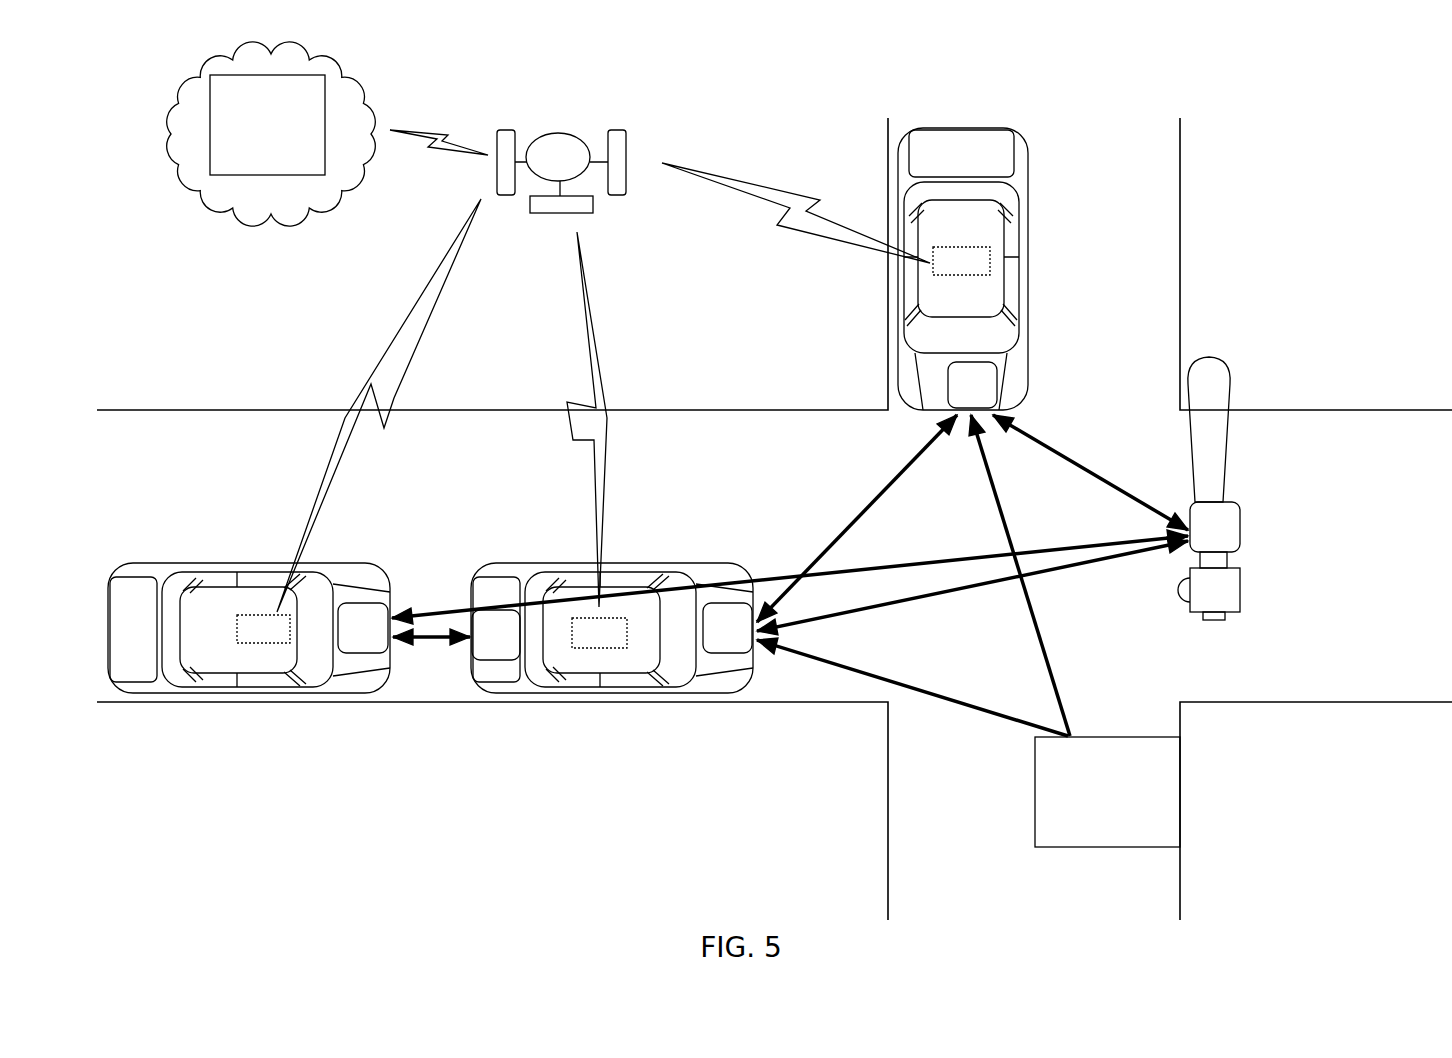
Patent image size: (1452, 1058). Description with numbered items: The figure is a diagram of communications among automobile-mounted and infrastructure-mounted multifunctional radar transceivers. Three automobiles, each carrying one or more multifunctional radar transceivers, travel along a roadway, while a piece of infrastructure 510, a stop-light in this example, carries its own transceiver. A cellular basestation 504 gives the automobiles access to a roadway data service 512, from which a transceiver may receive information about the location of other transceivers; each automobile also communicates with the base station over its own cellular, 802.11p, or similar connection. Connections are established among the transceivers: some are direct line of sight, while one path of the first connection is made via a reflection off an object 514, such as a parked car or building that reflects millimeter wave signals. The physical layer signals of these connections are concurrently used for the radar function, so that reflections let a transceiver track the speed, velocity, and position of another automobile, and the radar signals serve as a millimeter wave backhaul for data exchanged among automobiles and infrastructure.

The roadway data service 512 is at (284, 170).
The basestation 504 is at (566, 133).
The piece of infrastructure 510 is at (1228, 466).
The object 514 is at (1105, 848).